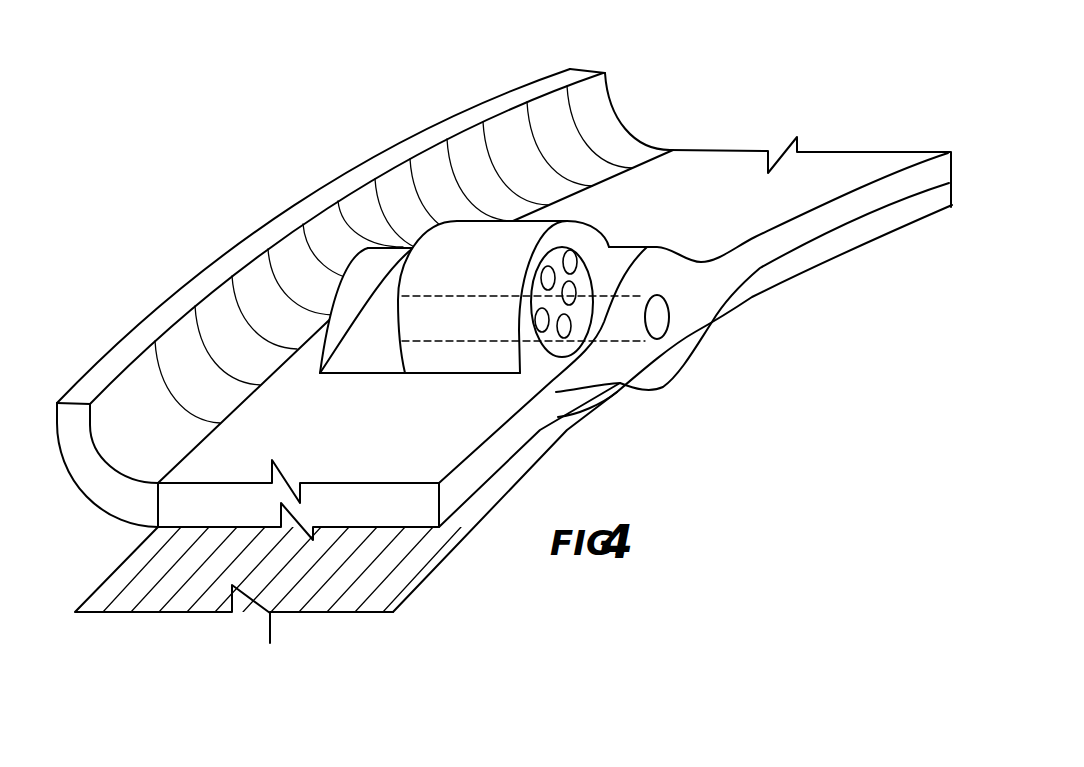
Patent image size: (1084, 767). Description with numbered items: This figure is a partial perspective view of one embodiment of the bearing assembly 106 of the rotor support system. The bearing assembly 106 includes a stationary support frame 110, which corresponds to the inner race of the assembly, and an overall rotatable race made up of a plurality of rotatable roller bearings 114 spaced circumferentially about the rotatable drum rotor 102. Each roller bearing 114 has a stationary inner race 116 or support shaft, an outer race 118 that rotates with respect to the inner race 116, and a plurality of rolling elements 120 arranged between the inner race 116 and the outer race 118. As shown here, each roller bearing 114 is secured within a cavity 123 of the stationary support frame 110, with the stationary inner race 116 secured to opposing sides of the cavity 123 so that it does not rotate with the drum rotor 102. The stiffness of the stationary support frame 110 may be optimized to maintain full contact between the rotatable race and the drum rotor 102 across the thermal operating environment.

The rotatable drum rotor 102 is at (403, 583).
The bearing assembly 106 is at (852, 85).
The stationary support frame 110 is at (672, 382).
The roller bearing 114 is at (452, 227).
The stationary inner race 116 is at (661, 318).
The outer race 118 is at (528, 232).
The rolling elements 120 is at (543, 323).
The cavity 123 is at (381, 322).